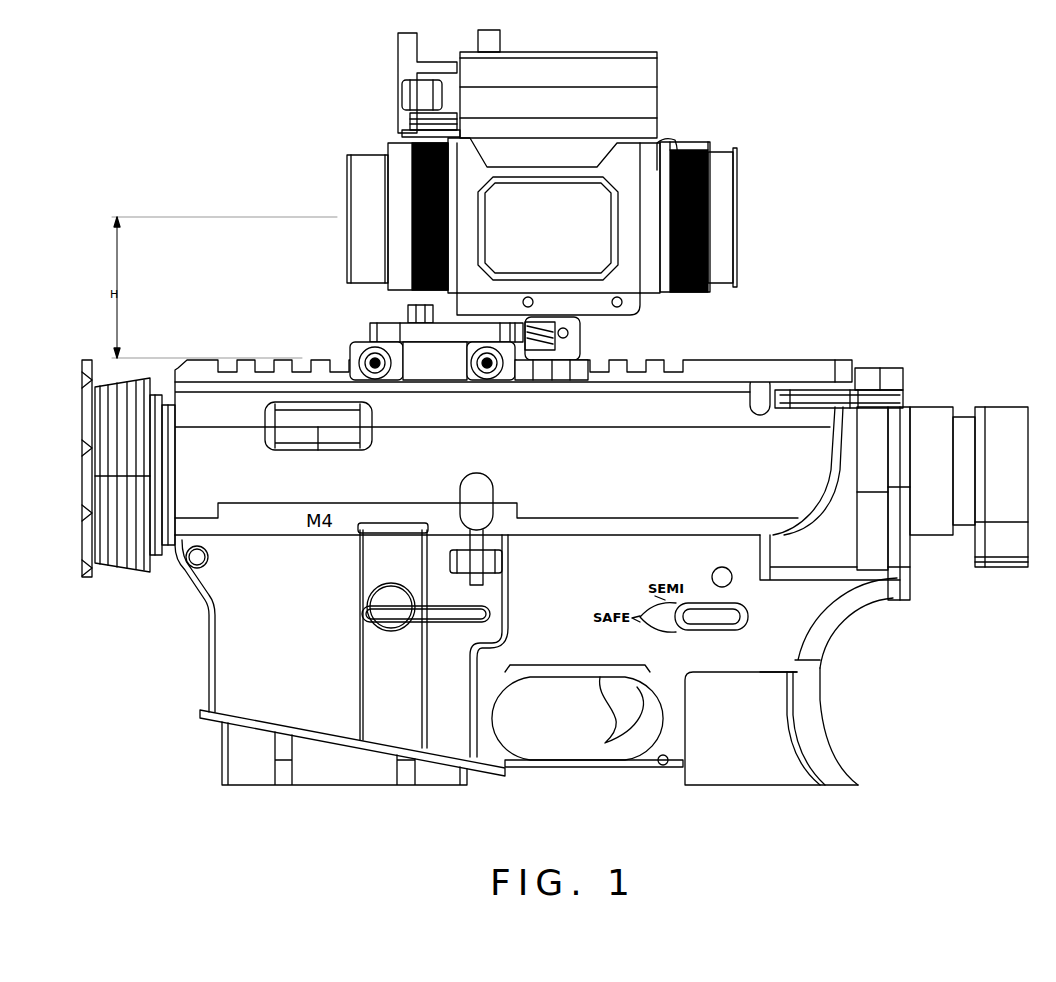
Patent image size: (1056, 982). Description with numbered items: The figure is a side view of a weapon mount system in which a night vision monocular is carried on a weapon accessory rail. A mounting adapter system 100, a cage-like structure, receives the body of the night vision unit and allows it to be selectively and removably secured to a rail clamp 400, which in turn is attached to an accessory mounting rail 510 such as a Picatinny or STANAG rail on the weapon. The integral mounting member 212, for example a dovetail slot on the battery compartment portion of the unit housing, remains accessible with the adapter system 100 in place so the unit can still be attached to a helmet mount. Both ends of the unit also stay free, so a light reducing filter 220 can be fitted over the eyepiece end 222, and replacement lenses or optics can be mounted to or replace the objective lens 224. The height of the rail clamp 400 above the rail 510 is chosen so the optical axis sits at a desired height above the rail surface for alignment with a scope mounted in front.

The mounting adapter system 100 is at (572, 186).
The integral mounting member 212 is at (295, 217).
The light reducing filter 220 is at (698, 140).
The eyepiece end 222 is at (738, 175).
The objective lens 224 is at (365, 155).
The rail clamp 400 is at (367, 322).
The accessory mounting rail 510 is at (245, 358).